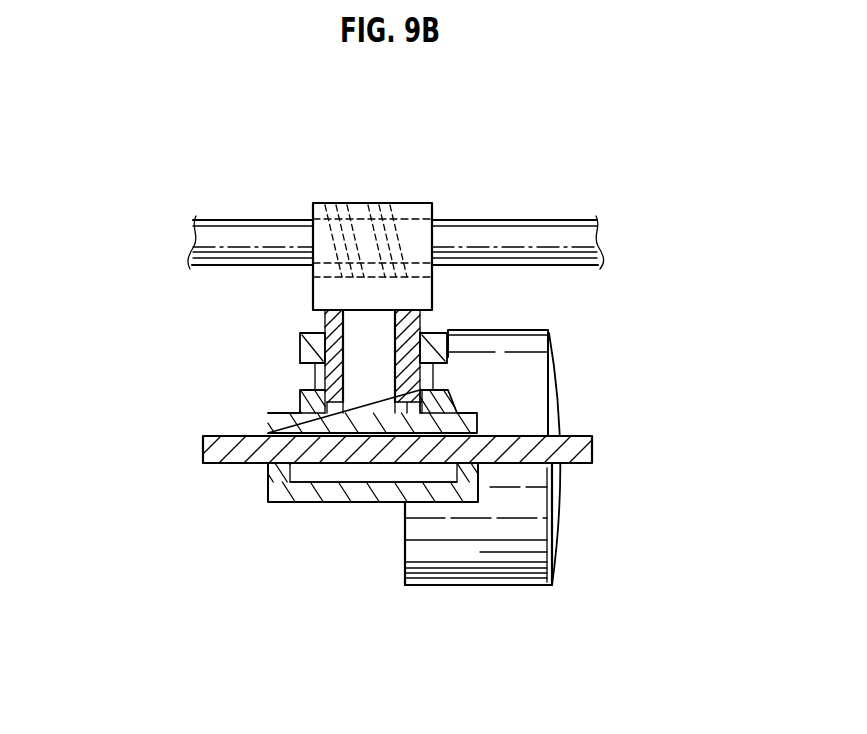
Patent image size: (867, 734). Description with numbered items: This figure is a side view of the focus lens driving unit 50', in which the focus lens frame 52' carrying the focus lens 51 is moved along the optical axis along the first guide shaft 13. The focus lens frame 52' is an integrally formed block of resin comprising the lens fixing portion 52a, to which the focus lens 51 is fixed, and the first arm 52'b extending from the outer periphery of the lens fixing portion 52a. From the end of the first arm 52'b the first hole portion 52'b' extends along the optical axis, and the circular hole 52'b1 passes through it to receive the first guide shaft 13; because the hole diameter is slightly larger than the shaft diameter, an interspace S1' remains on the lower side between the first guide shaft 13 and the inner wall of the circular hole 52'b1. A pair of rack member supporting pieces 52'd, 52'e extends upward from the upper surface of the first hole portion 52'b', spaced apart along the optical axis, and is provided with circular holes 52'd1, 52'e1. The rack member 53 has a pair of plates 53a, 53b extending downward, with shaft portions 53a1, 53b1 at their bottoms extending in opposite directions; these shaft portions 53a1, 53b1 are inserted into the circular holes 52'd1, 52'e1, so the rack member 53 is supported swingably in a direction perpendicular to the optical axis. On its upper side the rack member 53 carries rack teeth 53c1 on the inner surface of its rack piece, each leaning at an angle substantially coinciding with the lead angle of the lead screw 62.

The focus lens driving unit 50' is at (382, 375).
The lead screw 62 is at (270, 237).
The rack member 53 is at (403, 201).
The rack teeth 53c1 is at (400, 248).
The plate 53a is at (432, 313).
The plate 53b is at (325, 318).
The shaft portion 53a1 is at (422, 373).
The shaft portion 53b1 is at (313, 383).
The focus lens frame 52' is at (400, 480).
The lens fixing portion 52a is at (458, 568).
The first arm 52'b is at (404, 411).
The circular hole 52'b1 is at (314, 530).
The first hole portion 52'b' is at (373, 539).
The rack member supporting piece 52'd is at (529, 340).
The circular hole 52'd1 is at (535, 365).
The rack member supporting piece 52'e is at (246, 324).
The circular hole 52'e1 is at (241, 340).
The interspace S1' is at (362, 514).
The focus lens 51 is at (560, 496).
The first guide shaft 13 is at (222, 447).